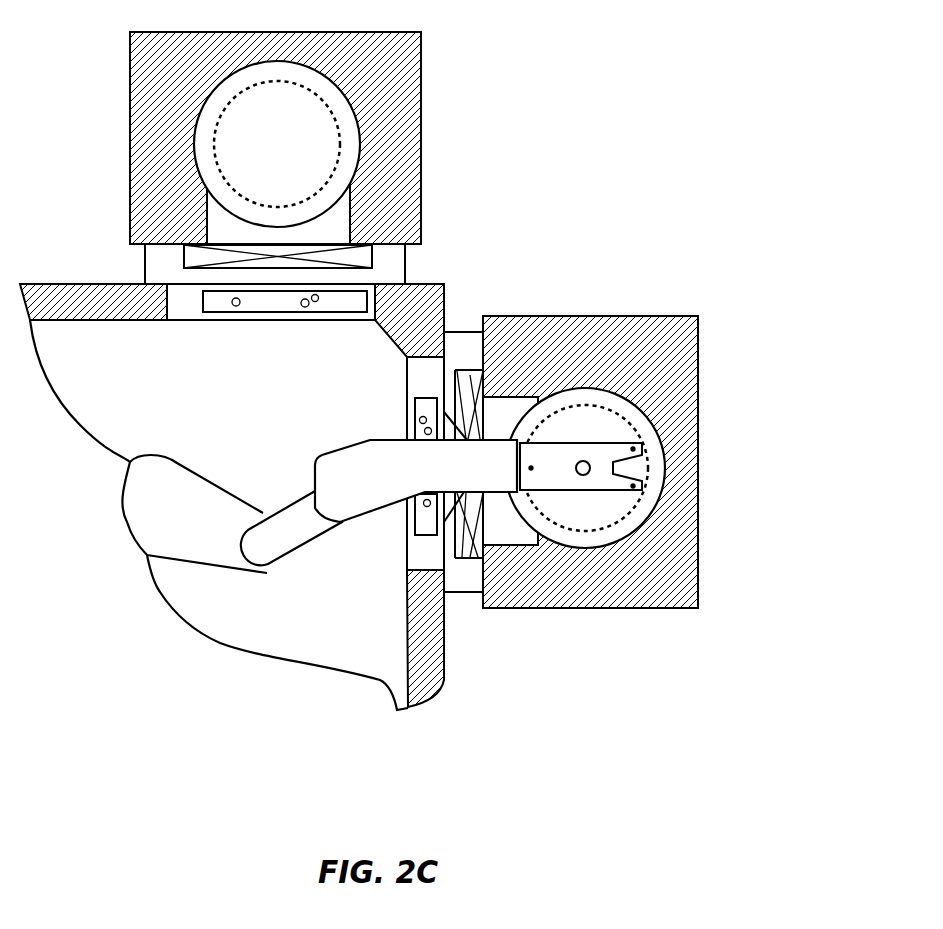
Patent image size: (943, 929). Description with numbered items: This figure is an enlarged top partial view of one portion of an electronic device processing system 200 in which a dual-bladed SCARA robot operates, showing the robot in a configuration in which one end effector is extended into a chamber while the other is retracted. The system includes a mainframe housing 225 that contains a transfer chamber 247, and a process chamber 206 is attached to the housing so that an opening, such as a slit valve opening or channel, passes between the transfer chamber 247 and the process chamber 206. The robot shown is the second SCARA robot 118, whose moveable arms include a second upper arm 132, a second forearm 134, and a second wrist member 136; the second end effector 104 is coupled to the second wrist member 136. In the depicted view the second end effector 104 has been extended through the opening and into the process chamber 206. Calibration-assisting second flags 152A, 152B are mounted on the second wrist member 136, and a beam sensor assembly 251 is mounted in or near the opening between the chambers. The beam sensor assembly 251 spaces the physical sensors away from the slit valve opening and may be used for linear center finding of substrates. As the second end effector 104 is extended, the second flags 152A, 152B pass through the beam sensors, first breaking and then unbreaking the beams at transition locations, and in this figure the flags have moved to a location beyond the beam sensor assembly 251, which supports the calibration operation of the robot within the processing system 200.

The electronic device processing system 200 is at (604, 84).
The process chamber 206 is at (362, 136).
The mainframe housing 225 is at (452, 278).
The beam sensor assembly 251 is at (282, 314).
The transfer chamber 247 is at (258, 369).
The second flag 152B is at (488, 382).
The second flag 152A is at (470, 558).
The second SCARA robot 118 is at (167, 452).
The second wrist member 136 is at (314, 461).
The second forearm 134 is at (310, 535).
The second upper arm 132 is at (205, 565).
The second end effector 104 is at (585, 492).